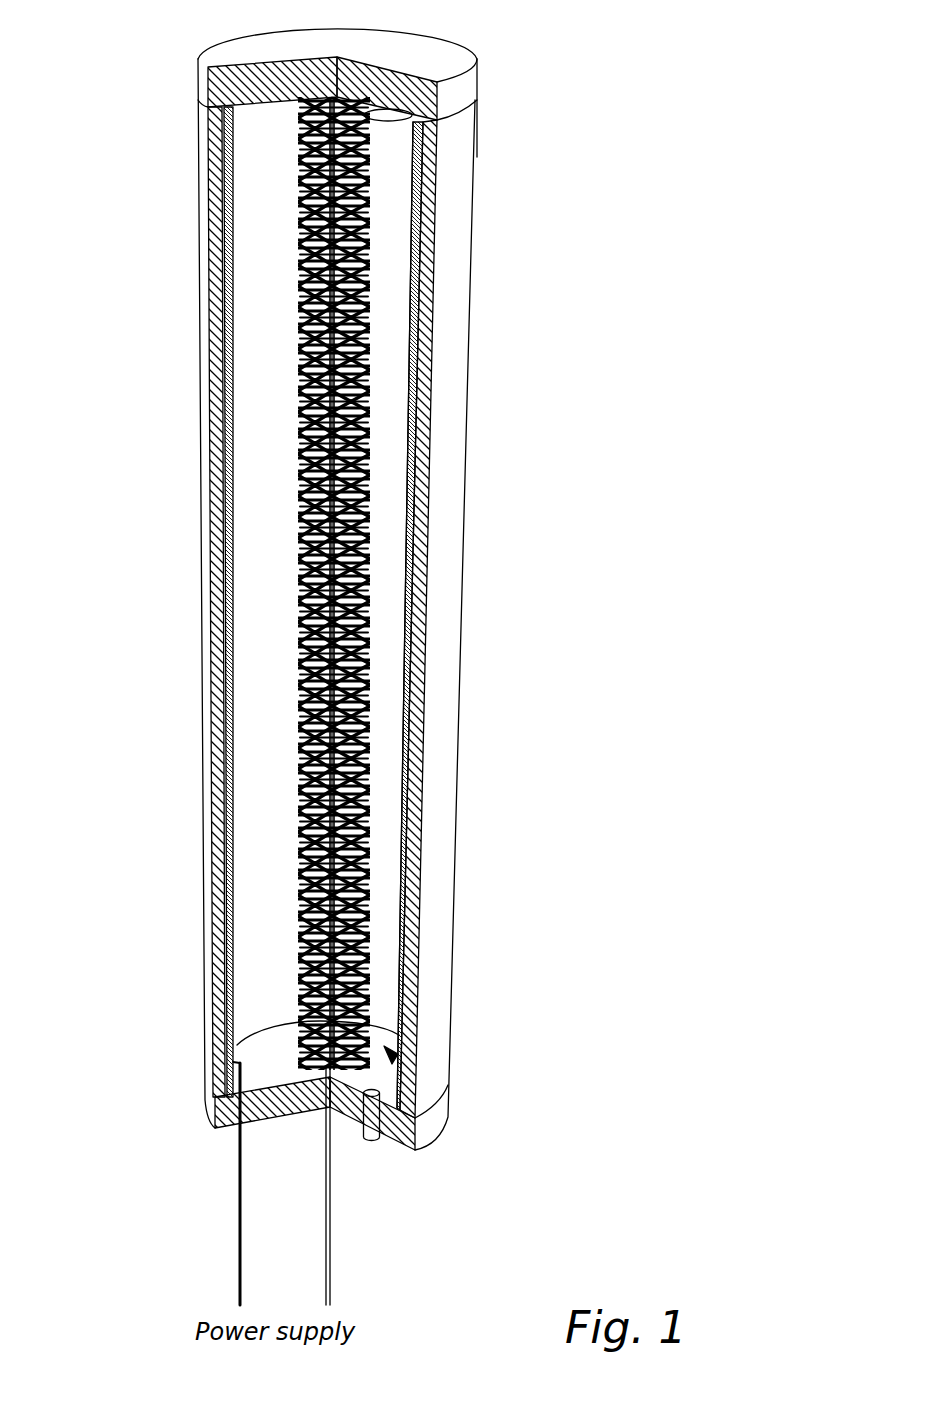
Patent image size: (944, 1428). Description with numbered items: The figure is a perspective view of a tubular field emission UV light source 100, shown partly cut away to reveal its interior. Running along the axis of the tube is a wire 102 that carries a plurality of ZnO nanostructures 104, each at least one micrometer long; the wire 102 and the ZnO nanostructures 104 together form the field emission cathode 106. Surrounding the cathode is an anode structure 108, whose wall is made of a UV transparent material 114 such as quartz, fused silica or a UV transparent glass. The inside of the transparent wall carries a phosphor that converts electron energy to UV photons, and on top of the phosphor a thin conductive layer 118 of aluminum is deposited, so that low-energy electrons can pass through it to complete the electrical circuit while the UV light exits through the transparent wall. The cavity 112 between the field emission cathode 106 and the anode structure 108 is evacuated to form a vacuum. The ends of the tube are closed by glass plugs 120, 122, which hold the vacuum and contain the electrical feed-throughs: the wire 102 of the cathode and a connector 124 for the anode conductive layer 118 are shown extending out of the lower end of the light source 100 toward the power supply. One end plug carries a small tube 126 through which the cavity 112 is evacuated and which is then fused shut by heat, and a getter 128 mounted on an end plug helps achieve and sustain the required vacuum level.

The field emission light source 100 is at (354, 654).
The wire 102 is at (325, 150).
The ZnO nanostructures 104 is at (350, 268).
The field emission cathode 106 is at (300, 543).
The anode structure 108 is at (300, 658).
The cavity 112 is at (417, 1082).
The UV transparent material 114 is at (440, 997).
The conductive layer 118 is at (412, 803).
The glass plug 120 is at (206, 1113).
The glass plug 122 is at (215, 90).
The connector 124 is at (240, 1223).
The tube 126 is at (373, 1140).
The getter 128 is at (368, 118).